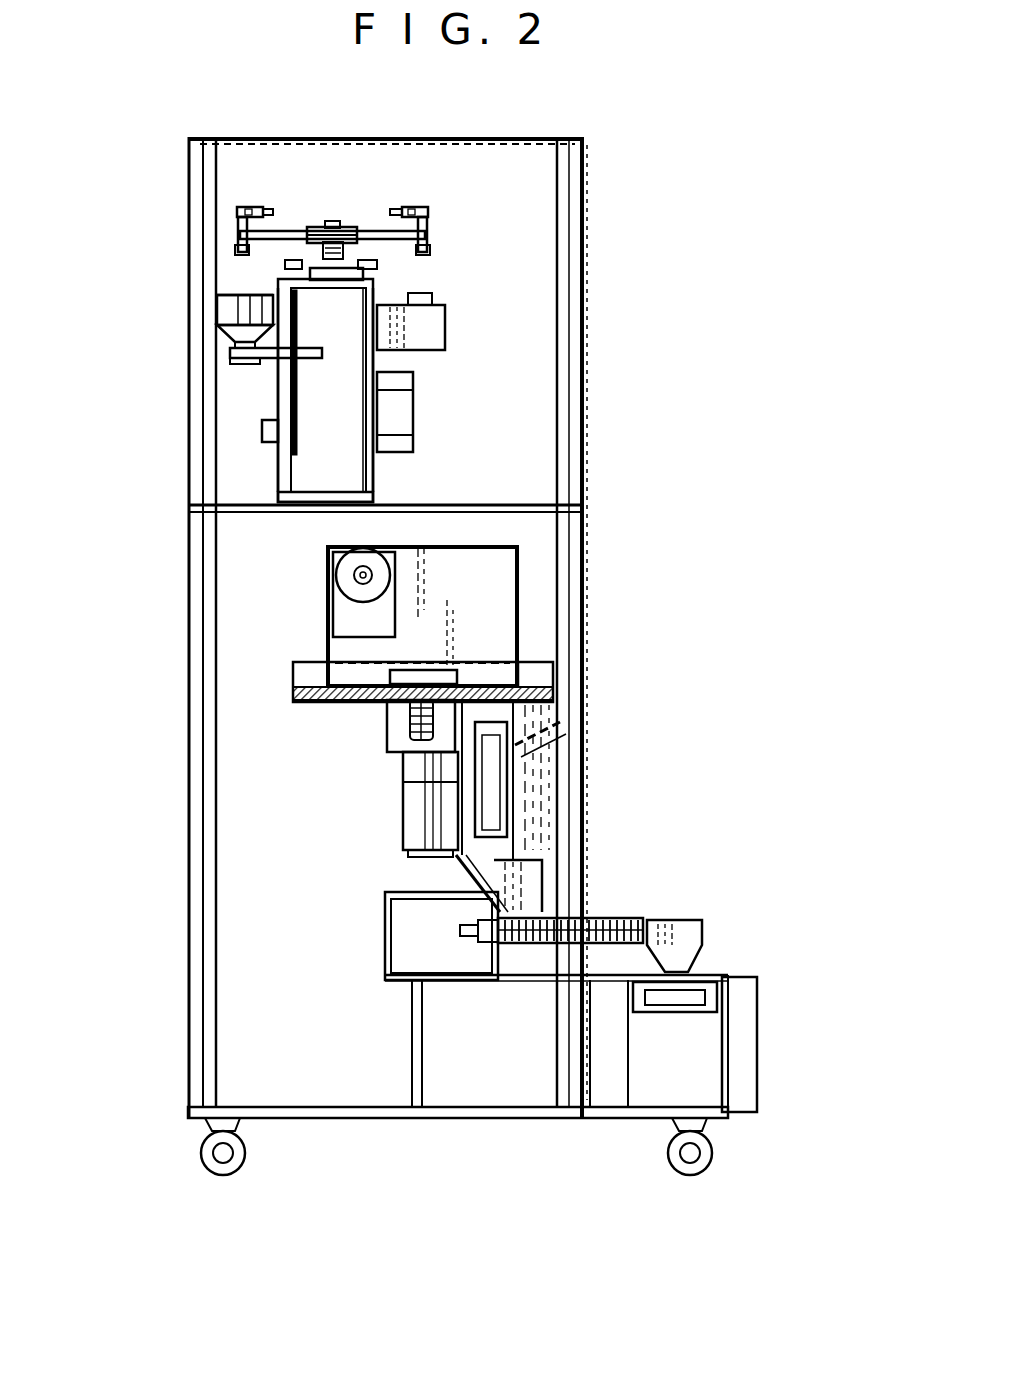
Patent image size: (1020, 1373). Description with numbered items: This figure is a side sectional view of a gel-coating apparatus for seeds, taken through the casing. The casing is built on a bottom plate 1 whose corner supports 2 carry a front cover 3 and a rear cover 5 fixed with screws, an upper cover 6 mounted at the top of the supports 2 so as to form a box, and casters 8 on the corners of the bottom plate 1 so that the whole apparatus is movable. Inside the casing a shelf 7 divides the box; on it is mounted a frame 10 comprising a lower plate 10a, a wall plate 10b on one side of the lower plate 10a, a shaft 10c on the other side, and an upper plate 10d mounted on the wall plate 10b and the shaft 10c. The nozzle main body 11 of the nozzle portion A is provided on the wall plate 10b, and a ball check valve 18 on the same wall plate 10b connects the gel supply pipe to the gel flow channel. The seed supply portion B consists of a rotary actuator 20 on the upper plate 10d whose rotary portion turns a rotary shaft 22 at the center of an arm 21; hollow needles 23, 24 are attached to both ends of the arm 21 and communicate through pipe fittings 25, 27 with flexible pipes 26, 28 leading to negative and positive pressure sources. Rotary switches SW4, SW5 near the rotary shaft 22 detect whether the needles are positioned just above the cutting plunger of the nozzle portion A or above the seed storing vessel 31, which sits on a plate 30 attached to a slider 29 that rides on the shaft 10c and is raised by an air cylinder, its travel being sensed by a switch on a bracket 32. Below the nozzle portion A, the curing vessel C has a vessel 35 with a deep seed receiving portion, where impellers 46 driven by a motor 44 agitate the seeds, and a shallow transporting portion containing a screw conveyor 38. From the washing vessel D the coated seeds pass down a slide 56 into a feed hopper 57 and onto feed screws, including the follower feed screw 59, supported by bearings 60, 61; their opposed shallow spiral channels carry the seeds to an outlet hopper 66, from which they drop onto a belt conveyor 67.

The bottom plate 1 is at (470, 1120).
The supports 2 is at (205, 935).
The front cover 3 is at (587, 655).
The rear cover 5 is at (190, 736).
The upper cover 6 is at (473, 138).
The shelf 7 is at (528, 513).
The casters 8 is at (205, 1152).
The frame 10 is at (377, 482).
The lower plate 10a is at (300, 505).
The wall plate 10b is at (375, 490).
The shaft 10c is at (278, 470).
The upper plate 10d is at (217, 300).
The nozzle main body 11 is at (440, 352).
The ball check valve 18 is at (413, 420).
The rotary actuator 20 is at (445, 325).
The arm 21 is at (365, 233).
The rotary shaft 22 is at (350, 262).
The hollow needle 23 is at (238, 250).
The hollow needle 24 is at (425, 240).
The pipe fitting 25 is at (240, 212).
The pipe 26 is at (262, 210).
The pipe fitting 27 is at (428, 212).
The pipe 28 is at (402, 212).
The slider 29 is at (280, 400).
The plate 30 is at (262, 360).
The seed storing vessel 31 is at (220, 333).
The bracket 32 is at (262, 432).
The vessel 35 is at (520, 620).
The screw conveyor 38 is at (340, 585).
The motor 44 is at (403, 812).
The impellers 46 is at (445, 672).
The slide 56 is at (492, 770).
The feed hopper 57 is at (530, 877).
The feed screw 59 is at (530, 945).
The bearing 60 is at (655, 935).
The bearing 61 is at (490, 955).
The outlet hopper 66 is at (702, 930).
The belt conveyor 67 is at (680, 1012).
The rotary switch SW4 is at (285, 265).
The rotary switch SW5 is at (378, 266).
The nozzle portion A is at (437, 360).
The seed supply portion B is at (319, 212).
The curing vessel C is at (322, 627).
The washing vessel D is at (590, 735).